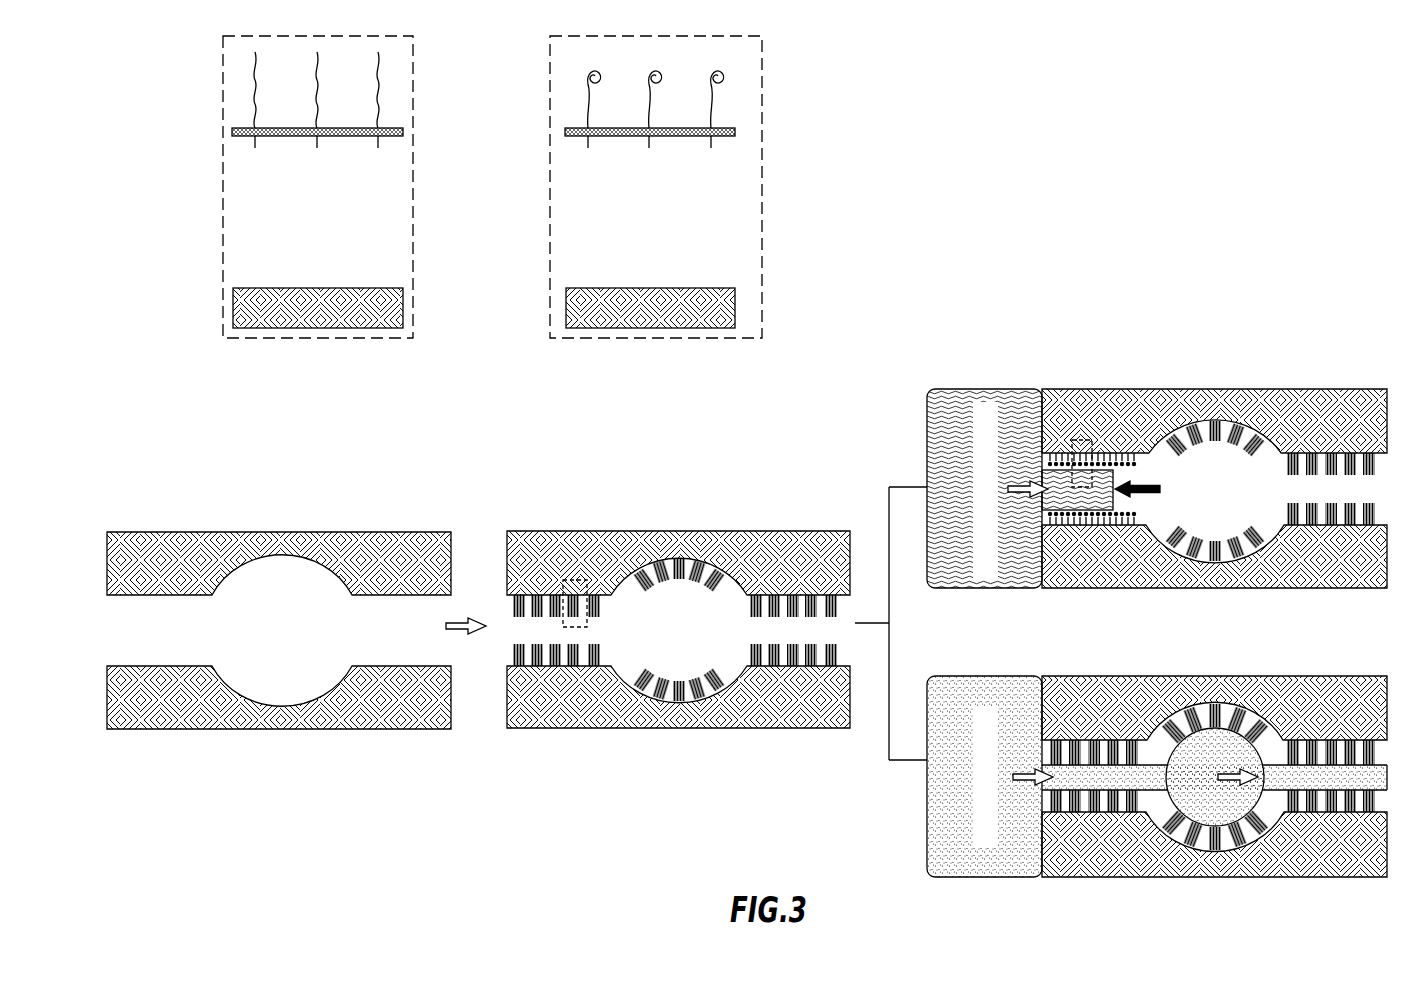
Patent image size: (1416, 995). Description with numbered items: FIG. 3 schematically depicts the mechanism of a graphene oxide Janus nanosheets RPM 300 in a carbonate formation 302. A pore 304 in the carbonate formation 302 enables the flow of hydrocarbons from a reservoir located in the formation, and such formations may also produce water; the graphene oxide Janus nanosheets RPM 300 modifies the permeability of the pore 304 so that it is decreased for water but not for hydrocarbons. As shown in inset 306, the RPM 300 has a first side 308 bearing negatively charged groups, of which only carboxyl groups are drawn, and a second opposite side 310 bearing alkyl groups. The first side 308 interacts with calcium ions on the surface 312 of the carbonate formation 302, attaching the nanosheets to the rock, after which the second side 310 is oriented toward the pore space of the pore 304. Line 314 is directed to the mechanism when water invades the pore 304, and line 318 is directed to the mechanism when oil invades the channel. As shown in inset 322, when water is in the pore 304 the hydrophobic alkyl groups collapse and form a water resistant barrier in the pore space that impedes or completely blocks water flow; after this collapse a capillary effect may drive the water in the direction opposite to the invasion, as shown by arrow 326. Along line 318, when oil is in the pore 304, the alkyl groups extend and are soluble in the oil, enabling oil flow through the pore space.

The graphene oxide Janus nanosheets RPM 300 is at (230, 131).
The carbonate formation 302 is at (150, 532).
The pore 304 is at (150, 666).
The inset 306 is at (359, 316).
The first side 308 is at (238, 210).
The second side 310 is at (250, 92).
The surface 312 is at (405, 318).
The line 314 is at (1113, 509).
The line 318 is at (910, 762).
The inset 322 is at (572, 80).
The arrow 326 is at (1160, 488).